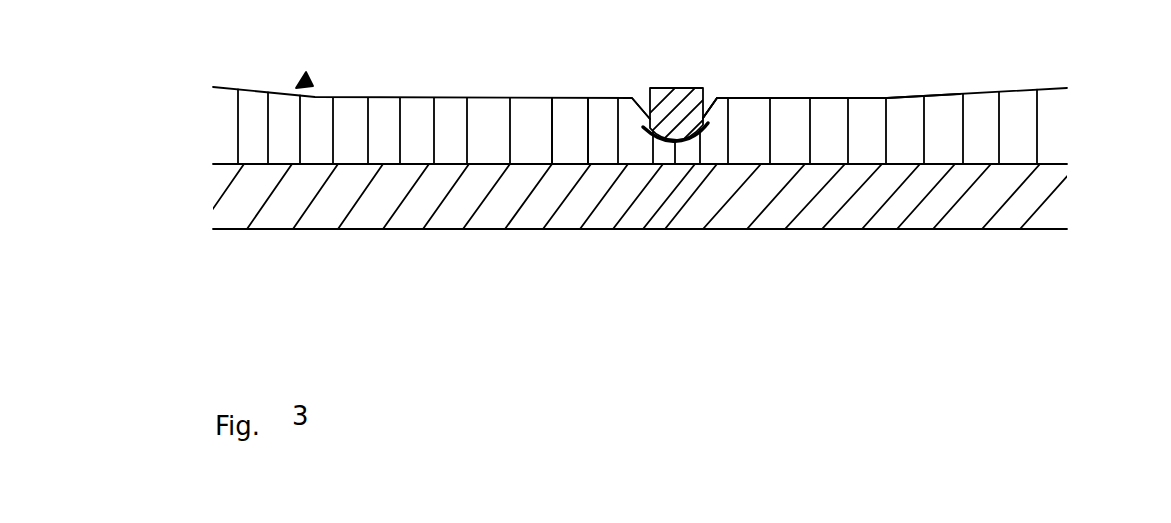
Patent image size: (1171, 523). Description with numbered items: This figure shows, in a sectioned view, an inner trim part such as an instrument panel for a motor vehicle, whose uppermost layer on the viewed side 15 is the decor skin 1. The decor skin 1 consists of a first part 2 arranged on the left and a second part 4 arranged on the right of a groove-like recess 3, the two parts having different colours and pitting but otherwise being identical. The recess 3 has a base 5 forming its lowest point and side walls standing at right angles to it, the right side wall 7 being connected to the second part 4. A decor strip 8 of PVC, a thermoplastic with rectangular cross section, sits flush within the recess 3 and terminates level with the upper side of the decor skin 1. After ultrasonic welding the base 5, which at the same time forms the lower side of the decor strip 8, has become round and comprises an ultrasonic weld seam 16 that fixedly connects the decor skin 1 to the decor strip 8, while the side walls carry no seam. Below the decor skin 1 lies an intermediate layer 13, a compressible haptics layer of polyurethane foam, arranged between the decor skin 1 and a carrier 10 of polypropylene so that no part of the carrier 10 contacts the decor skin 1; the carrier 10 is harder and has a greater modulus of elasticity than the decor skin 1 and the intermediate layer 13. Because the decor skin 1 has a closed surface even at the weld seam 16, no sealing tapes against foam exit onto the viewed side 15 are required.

The decor skin 1 is at (507, 98).
The first part 2 is at (560, 100).
The recess 3 is at (633, 128).
The second part 4 is at (843, 98).
The base 5 is at (700, 128).
The right side wall 7 is at (705, 121).
The decor strip 8 is at (676, 88).
The carrier 10 is at (1050, 210).
The intermediate layer 13 is at (1050, 150).
The viewed side 15 is at (311, 80).
The ultrasonic weld seam 16 is at (646, 130).